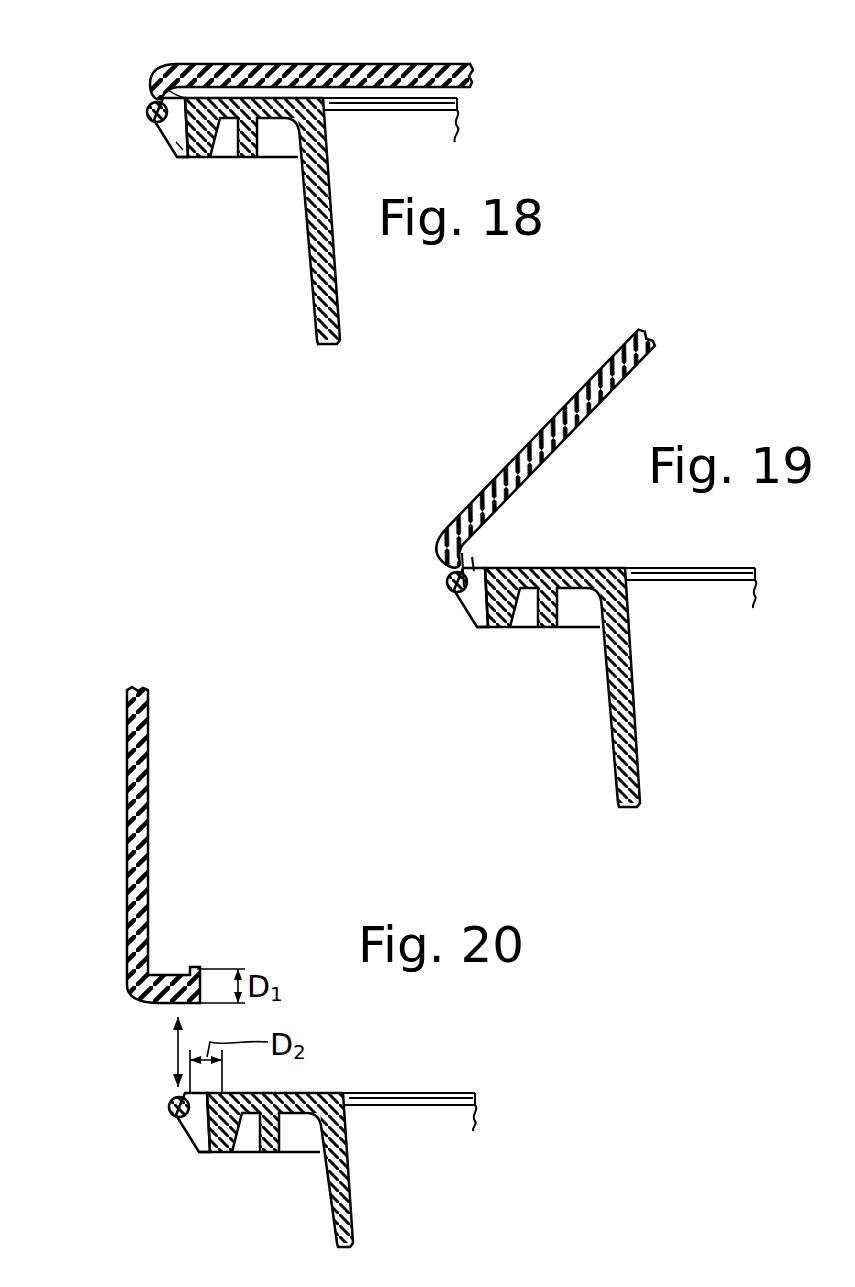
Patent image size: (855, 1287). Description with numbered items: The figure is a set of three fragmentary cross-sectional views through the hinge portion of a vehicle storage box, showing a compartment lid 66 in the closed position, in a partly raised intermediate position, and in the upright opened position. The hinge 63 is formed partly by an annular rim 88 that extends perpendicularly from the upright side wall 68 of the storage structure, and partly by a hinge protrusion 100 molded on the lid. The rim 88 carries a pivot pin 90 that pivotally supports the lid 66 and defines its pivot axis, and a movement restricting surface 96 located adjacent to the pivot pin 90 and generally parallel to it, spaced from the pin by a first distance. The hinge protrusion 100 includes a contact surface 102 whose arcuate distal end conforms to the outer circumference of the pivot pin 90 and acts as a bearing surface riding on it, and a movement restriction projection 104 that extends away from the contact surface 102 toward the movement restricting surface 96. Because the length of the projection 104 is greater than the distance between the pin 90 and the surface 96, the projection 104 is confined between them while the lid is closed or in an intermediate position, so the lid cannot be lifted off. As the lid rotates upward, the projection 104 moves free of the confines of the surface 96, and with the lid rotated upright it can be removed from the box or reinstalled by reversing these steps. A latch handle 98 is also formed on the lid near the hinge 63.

In FIG. 18, the hinge 63 is at (122, 102).
In FIG. 19, the hinge 63 is at (440, 615).
In FIG. 18, the second compartment lid 66 is at (297, 64).
In FIG. 19, the second compartment lid 66 is at (503, 467).
In FIG. 20, the second compartment lid 66 is at (140, 826).
In FIG. 18, the side wall 68 is at (274, 221).
In FIG. 19, the side wall 68 is at (587, 687).
In FIG. 20, the side wall 68 is at (330, 1170).
In FIG. 18, the rim 88 is at (317, 219).
In FIG. 19, the rim 88 is at (616, 685).
In FIG. 20, the rim 88 is at (337, 1174).
In FIG. 18, the pivot pin 90 is at (96, 129).
In FIG. 19, the pivot pin 90 is at (398, 605).
In FIG. 20, the pivot pin 90 is at (130, 1127).
In FIG. 18, the movement restricting surface 96 is at (151, 179).
In FIG. 19, the movement restricting surface 96 is at (451, 648).
In FIG. 20, the movement restricting surface 96 is at (162, 1152).
In FIG. 18, the latch handle 98 is at (150, 97).
In FIG. 19, the latch handle 98 is at (440, 578).
In FIG. 18, the hinge protrusion 100 is at (188, 87).
In FIG. 19, the hinge protrusion 100 is at (472, 553).
In FIG. 20, the hinge protrusion 100 is at (165, 973).
In FIG. 20, the contact surface 102 is at (167, 1003).
In FIG. 18, the movement restriction projection 104 is at (173, 148).
In FIG. 19, the movement restriction projection 104 is at (490, 568).
In FIG. 20, the movement restriction projection 104 is at (195, 967).